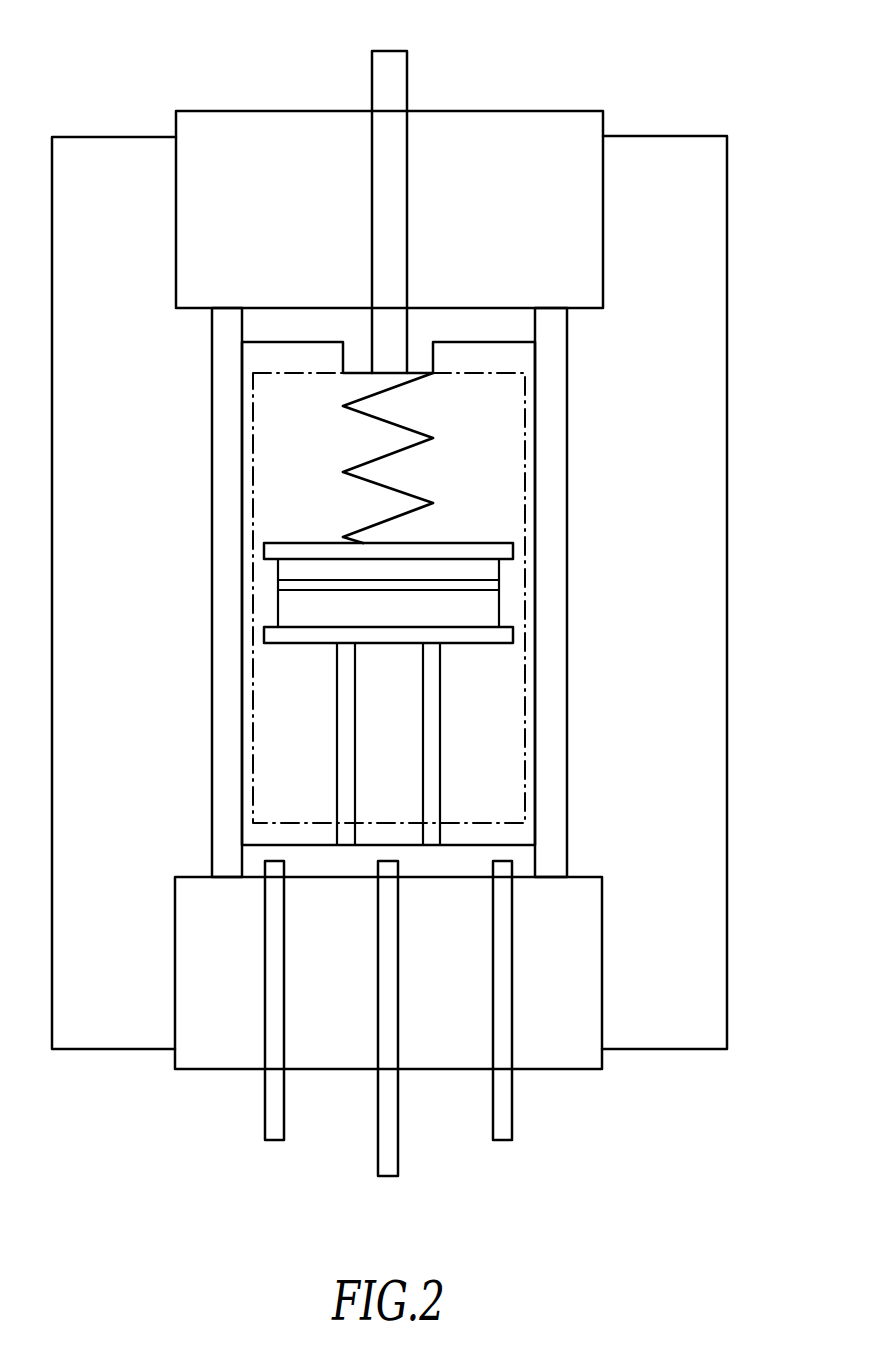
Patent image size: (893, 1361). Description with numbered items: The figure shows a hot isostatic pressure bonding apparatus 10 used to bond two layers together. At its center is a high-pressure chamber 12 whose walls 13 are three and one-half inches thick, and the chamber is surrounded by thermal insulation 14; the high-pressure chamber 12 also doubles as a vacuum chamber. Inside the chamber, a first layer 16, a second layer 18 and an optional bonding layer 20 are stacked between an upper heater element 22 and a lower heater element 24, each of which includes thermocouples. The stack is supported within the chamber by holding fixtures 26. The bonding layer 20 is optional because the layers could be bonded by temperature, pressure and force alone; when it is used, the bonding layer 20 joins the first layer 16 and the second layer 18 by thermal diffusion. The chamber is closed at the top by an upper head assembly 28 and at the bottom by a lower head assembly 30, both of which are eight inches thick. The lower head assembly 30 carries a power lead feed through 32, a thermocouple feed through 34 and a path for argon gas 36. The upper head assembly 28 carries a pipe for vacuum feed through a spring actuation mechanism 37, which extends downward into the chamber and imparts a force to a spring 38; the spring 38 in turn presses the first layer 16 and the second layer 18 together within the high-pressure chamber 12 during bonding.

The HIP bonding apparatus 10 is at (165, 72).
The high-pressure chamber 12 is at (520, 363).
The walls 13 is at (728, 455).
The thermal insulation 14 is at (211, 730).
The first layer 16 is at (299, 572).
The second layer 18 is at (300, 617).
The bonding layer 20 is at (438, 590).
The upper heater element 22 is at (438, 548).
The lower heater element 24 is at (457, 637).
The holding fixtures 26 is at (441, 762).
The upper head assembly 28 is at (605, 208).
The lower head assembly 30 is at (604, 958).
The power lead feed through 32 is at (512, 1108).
The thermocouple feed through 34 is at (265, 1103).
The path for argon gas 36 is at (398, 1153).
The spring actuation mechanism 37 is at (385, 50).
The spring 38 is at (413, 430).